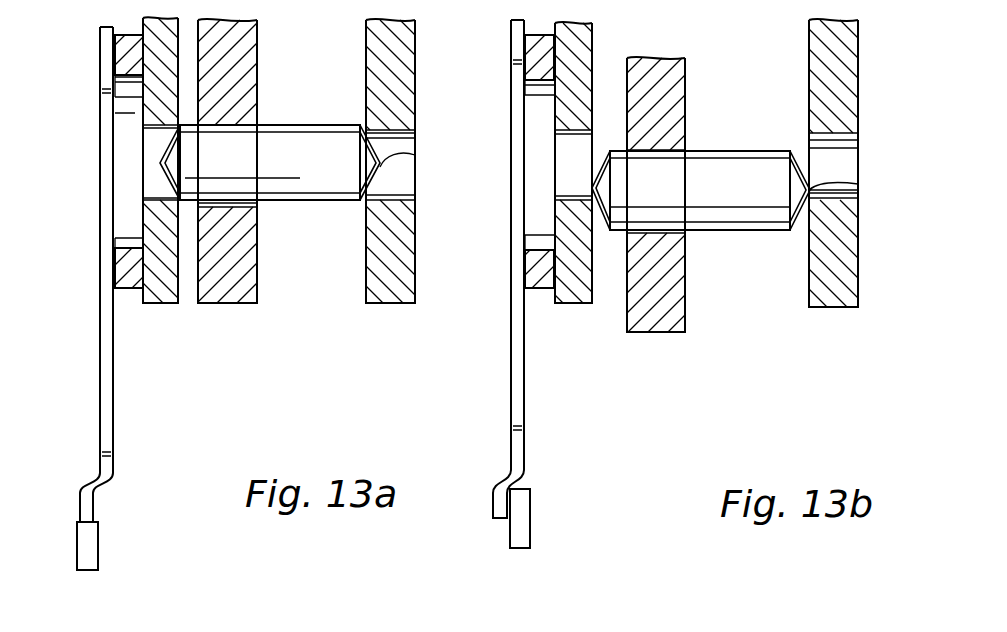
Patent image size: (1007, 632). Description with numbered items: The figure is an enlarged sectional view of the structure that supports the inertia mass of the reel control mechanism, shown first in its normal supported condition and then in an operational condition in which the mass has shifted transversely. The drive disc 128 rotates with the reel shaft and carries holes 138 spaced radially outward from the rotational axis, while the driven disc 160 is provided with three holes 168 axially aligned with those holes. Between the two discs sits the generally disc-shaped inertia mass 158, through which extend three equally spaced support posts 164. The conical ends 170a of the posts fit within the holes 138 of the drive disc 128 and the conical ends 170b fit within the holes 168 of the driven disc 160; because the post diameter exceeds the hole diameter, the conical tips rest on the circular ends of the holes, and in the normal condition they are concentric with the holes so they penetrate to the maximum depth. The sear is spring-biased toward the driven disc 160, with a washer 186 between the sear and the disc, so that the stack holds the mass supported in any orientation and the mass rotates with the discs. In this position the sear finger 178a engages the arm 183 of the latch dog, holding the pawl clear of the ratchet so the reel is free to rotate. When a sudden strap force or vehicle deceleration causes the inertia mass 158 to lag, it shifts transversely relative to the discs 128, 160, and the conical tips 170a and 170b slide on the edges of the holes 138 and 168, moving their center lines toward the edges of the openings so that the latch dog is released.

In FIG. 13A, the drive disc 128 is at (392, 287).
In FIG. 13B, the drive disc 128 is at (850, 277).
In FIG. 13A, the holes 138 is at (403, 190).
In FIG. 13B, the holes 138 is at (838, 135).
In FIG. 13A, the inertia mass 158 is at (247, 287).
In FIG. 13B, the inertia mass 158 is at (665, 62).
In FIG. 13A, the driven disc 160 is at (170, 297).
In FIG. 13B, the driven disc 160 is at (583, 47).
In FIG. 13A, the support posts 164 is at (298, 192).
In FIG. 13B, the support posts 164 is at (714, 222).
In FIG. 13A, the holes 168 is at (155, 134).
In FIG. 13B, the holes 168 is at (553, 136).
In FIG. 13A, the conical ends 170a is at (387, 158).
In FIG. 13B, the conical ends 170a is at (855, 187).
In FIG. 13A, the conical ends 170b is at (162, 170).
In FIG. 13A, the finger 178a is at (93, 512).
In FIG. 13B, the finger 178a is at (494, 500).
In FIG. 13A, the arm 183 is at (100, 553).
In FIG. 13B, the arm 183 is at (522, 527).
In FIG. 13A, the washer 186 is at (138, 285).
In FIG. 13B, the washer 186 is at (555, 290).